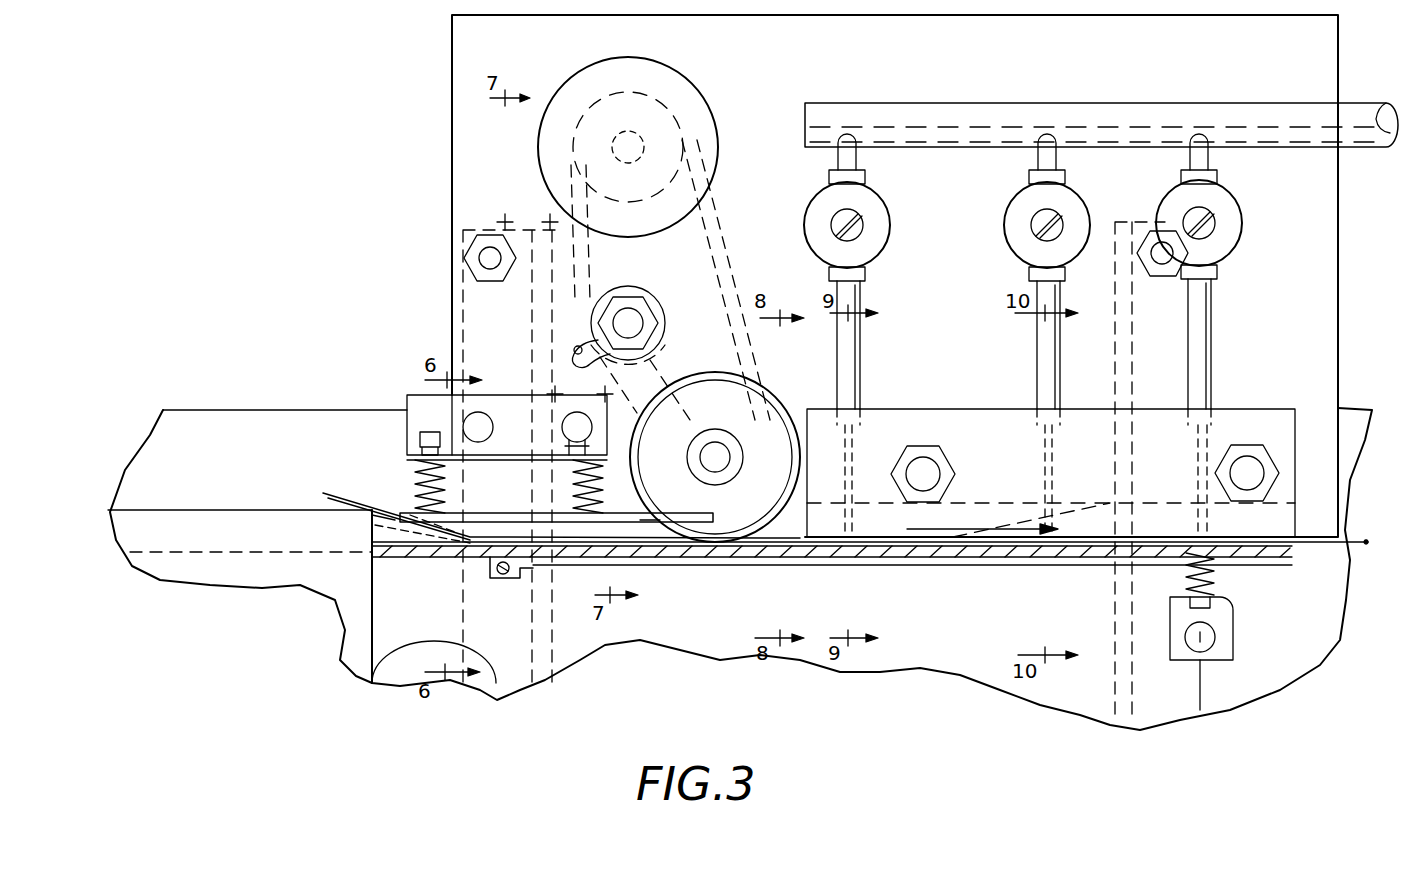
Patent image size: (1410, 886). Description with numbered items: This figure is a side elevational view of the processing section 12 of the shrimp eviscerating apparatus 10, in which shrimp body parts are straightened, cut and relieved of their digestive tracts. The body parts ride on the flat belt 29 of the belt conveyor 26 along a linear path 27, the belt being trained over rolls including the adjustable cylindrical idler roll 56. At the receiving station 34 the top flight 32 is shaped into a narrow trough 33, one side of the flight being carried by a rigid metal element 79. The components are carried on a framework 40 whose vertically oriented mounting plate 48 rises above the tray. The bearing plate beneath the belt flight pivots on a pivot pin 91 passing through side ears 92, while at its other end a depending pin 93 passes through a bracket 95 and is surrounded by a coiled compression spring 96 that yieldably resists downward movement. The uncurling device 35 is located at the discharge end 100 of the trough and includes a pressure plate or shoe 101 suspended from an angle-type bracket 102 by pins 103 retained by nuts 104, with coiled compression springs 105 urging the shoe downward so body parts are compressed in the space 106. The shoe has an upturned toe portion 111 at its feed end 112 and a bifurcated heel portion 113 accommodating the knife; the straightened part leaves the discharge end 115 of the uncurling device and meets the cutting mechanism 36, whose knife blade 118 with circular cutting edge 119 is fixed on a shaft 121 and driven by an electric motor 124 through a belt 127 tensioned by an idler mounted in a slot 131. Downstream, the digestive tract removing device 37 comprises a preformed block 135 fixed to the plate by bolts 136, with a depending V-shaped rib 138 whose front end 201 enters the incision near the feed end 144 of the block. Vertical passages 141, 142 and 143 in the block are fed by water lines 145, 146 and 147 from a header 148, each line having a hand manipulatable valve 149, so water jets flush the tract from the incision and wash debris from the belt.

The eviscerating apparatus 10 is at (393, 168).
The processing section 12 is at (328, 357).
The belt conveyor 26 is at (1308, 558).
The linear path 27 is at (928, 527).
The flat belt 29 is at (1152, 542).
The top flight 32 is at (398, 560).
The narrow trough 33 is at (388, 512).
The receiving station 34 is at (193, 510).
The uncurling device 35 is at (512, 502).
The cutting mechanism 36 is at (748, 375).
The digestive tract removing device 37 is at (880, 409).
The framework 40 is at (223, 409).
The mounting plate 48 is at (1338, 80).
The cylindrical idler roll 56 is at (467, 643).
The rigid metal element 79 is at (373, 612).
The pivot pin 91 is at (512, 578).
The side ears 92 is at (495, 578).
The depending pin 93 is at (1186, 580).
The bracket 95 is at (1235, 620).
The coiled compression spring 96 is at (1214, 580).
The discharge end of the trough 100 is at (390, 498).
The pressure plate or shoe 101 is at (632, 502).
The angle-type bracket 102 is at (520, 392).
The pins 103 is at (451, 427).
The nuts 104 is at (412, 444).
The coiled compression springs 105 is at (456, 490).
The space 106 is at (572, 548).
The toe portion 111 is at (337, 486).
The feed end of the shoe 112 is at (323, 500).
The heel portion 113 is at (708, 500).
The discharge end of the uncurling device 115 is at (688, 516).
The knife blade 118 is at (772, 398).
The circular cutting edge 119 is at (800, 470).
The shaft 121 is at (708, 446).
The electric motor 124 is at (698, 92).
The belt 127 is at (715, 262).
The slot 131 is at (575, 336).
The preformed block 135 is at (940, 409).
The bolts 136 is at (932, 447).
The V-shaped rib 138 is at (812, 555).
The first vertical passage 141 is at (852, 458).
The second vertical passage 142 is at (1055, 460).
The third vertical passage 143 is at (1196, 465).
The feed end of the block 144 is at (760, 545).
The water line 145 is at (862, 368).
The water line 146 is at (1062, 355).
The water line 147 is at (1213, 330).
The header 148 is at (1060, 103).
The valve 149 is at (890, 237).
The front end of the rib 201 is at (745, 548).